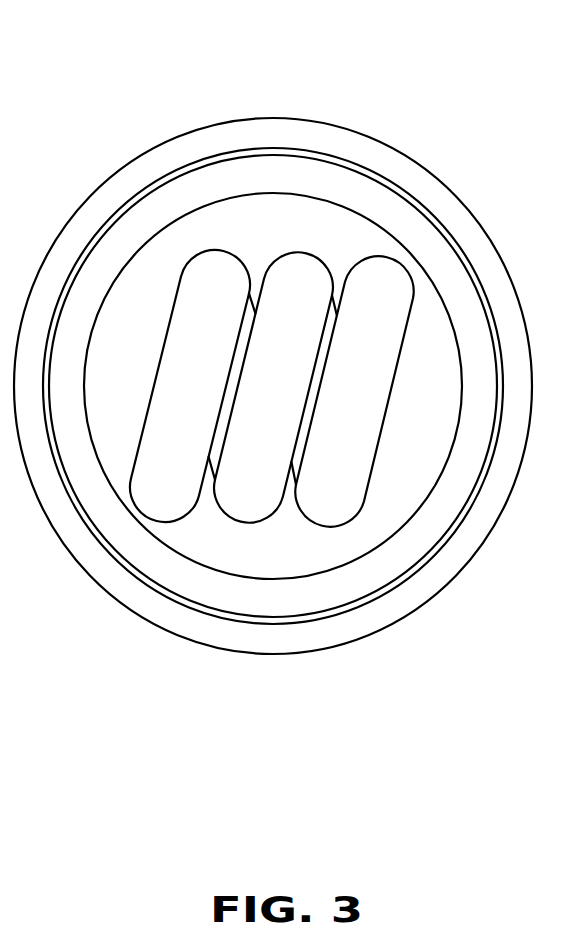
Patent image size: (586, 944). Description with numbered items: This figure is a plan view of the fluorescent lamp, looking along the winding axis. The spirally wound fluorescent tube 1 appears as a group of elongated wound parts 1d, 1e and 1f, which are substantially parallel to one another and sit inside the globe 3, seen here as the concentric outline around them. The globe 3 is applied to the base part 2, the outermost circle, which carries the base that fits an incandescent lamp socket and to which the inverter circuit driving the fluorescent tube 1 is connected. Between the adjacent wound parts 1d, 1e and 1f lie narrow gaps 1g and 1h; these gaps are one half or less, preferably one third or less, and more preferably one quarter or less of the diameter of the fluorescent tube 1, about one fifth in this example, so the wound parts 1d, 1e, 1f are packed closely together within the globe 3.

The fluorescent tube 1 is at (317, 252).
The base part 2 is at (481, 226).
The globe 3 is at (411, 197).
The wound part 1d is at (190, 333).
The wound part 1e is at (243, 500).
The wound part 1f is at (343, 500).
The gap 1g is at (197, 512).
The gap 1h is at (292, 500).